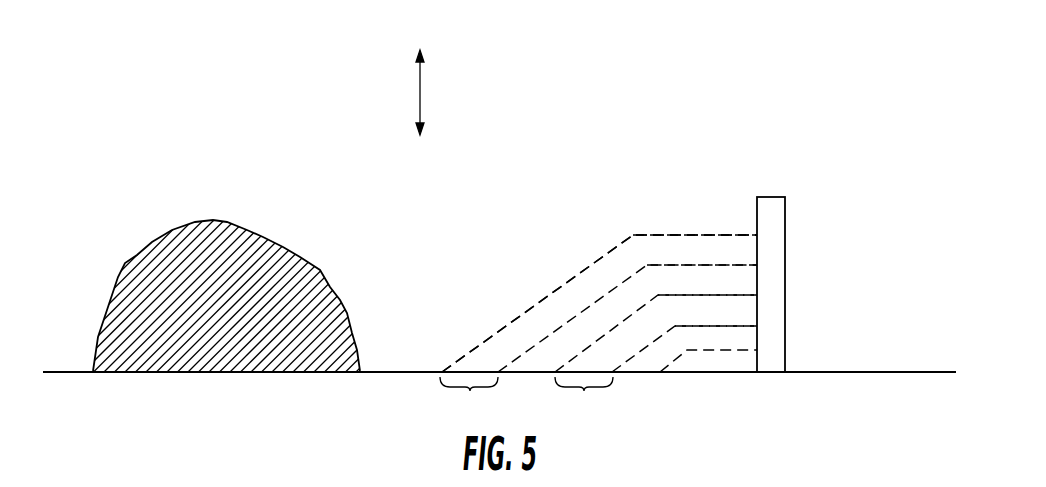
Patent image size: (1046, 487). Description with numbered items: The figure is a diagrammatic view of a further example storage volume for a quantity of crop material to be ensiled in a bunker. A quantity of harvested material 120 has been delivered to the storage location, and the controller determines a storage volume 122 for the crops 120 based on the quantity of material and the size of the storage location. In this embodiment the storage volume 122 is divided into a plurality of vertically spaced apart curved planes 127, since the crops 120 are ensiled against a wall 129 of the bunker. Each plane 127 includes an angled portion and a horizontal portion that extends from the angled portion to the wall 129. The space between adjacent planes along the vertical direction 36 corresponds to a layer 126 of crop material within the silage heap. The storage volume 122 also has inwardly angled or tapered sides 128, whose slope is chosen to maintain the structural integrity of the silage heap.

The vertical direction 36 is at (419, 95).
The harvested material 120 is at (170, 233).
The storage volume 122 is at (613, 186).
The layer 126 is at (526, 398).
The curved planes 127 is at (727, 326).
The inwardly angled sides 128 is at (520, 312).
The wall 129 is at (786, 220).